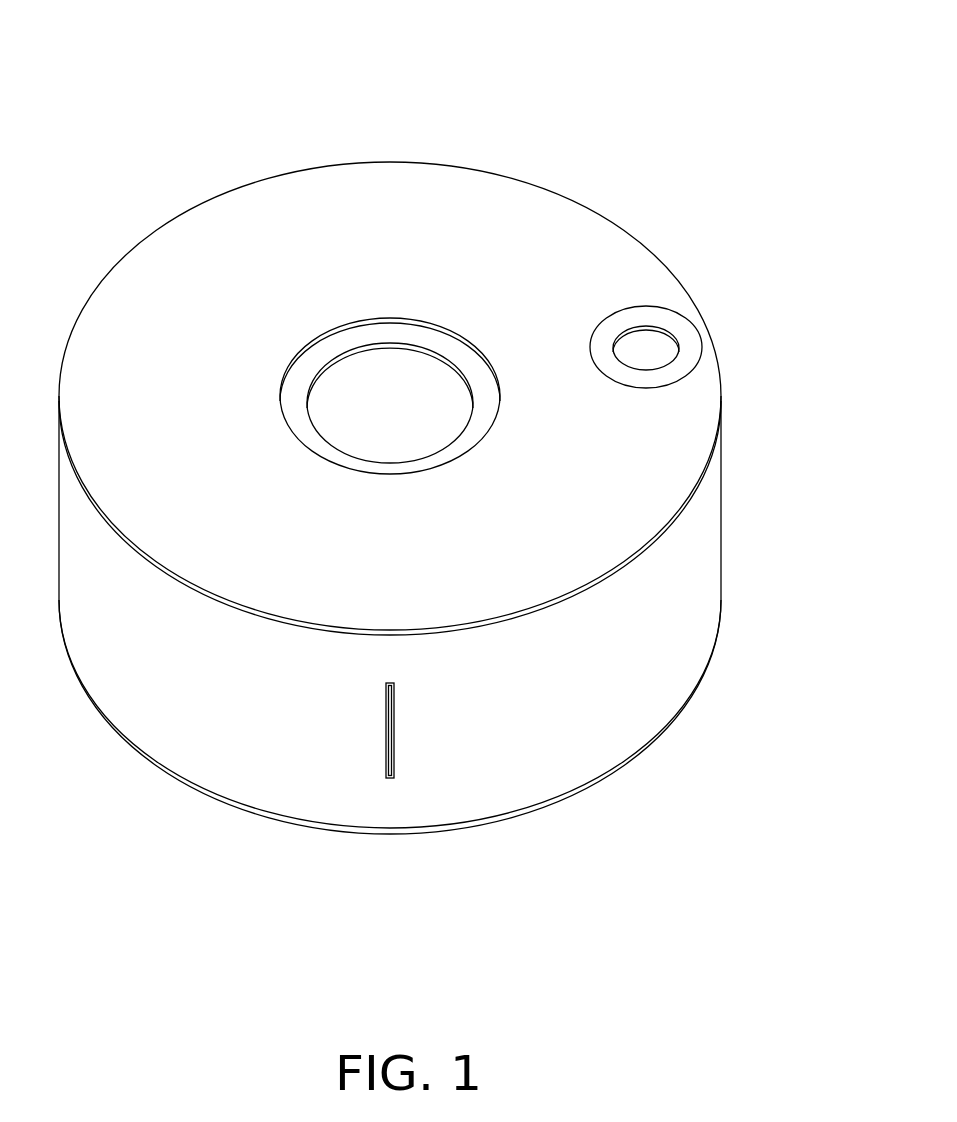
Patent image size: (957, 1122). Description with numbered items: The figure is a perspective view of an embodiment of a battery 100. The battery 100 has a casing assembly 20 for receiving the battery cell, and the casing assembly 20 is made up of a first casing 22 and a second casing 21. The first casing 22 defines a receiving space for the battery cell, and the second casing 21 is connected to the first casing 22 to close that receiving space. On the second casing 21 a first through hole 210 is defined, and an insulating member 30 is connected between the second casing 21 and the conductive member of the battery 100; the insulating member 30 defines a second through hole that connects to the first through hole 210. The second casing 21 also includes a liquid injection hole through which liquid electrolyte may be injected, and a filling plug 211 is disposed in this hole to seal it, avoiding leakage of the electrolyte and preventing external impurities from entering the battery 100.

The battery 100 is at (437, 29).
The casing assembly 20 is at (811, 387).
The second casing 21 is at (705, 418).
The first casing 22 is at (705, 511).
The insulating member 30 is at (347, 340).
The first through hole 210 is at (408, 367).
The filling plug 211 is at (677, 325).